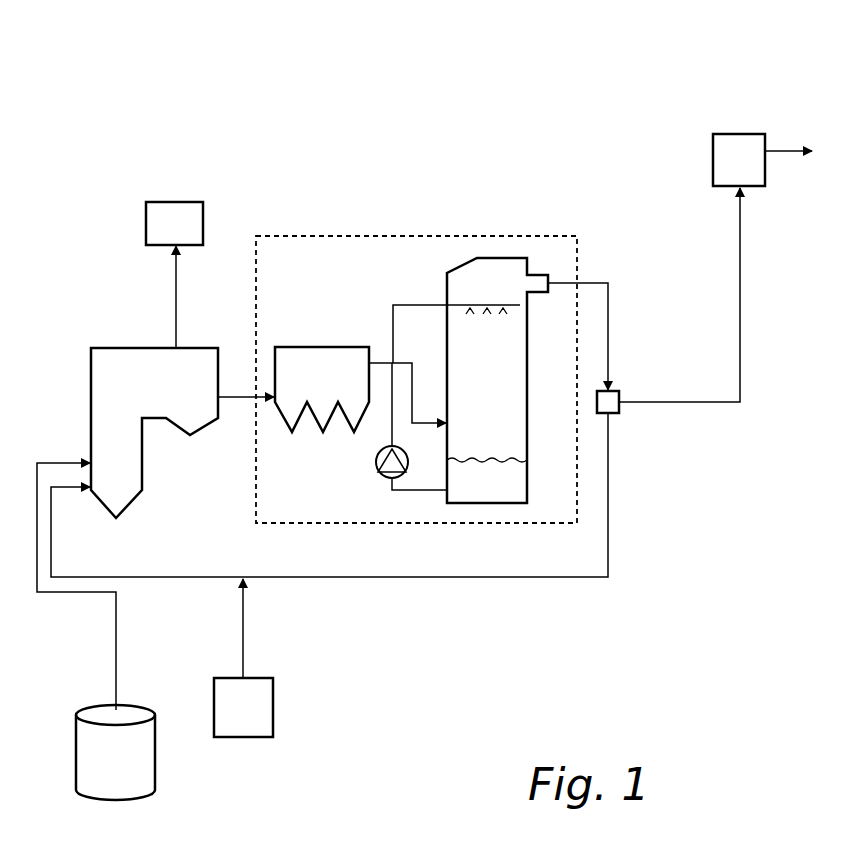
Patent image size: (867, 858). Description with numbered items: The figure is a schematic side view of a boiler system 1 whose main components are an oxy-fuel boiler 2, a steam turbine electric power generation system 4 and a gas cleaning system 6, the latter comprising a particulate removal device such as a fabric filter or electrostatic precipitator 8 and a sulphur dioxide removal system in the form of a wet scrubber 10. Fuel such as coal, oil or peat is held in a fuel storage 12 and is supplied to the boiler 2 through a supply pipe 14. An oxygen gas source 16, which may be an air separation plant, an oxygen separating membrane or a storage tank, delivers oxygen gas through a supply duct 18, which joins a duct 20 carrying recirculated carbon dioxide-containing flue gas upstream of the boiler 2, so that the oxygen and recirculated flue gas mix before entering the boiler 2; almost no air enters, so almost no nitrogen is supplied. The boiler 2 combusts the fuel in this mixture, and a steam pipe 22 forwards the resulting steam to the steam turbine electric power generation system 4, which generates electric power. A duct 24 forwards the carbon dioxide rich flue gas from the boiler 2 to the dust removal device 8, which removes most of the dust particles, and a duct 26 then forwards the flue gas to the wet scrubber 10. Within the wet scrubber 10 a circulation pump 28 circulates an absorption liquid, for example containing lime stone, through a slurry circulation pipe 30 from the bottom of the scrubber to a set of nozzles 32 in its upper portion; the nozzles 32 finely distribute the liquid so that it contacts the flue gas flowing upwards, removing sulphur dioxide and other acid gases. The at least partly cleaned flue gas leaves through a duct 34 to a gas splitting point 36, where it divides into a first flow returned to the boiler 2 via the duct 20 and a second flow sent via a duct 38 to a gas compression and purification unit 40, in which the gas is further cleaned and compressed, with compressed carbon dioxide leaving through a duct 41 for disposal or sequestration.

The boiler system 1 is at (110, 95).
The boiler 2 is at (105, 420).
The steam turbine electric power generation system 4 is at (146, 222).
The gas cleaning system 6 is at (423, 232).
The electrostatic precipitator 8 is at (300, 347).
The wet scrubber 10 is at (513, 257).
The fuel storage 12 is at (143, 764).
The supply pipe 14 is at (116, 612).
The oxygen gas source 16 is at (262, 708).
The supply duct 18 is at (243, 627).
The duct 20 is at (352, 578).
The steam pipe 22 is at (175, 302).
The duct 24 is at (227, 398).
The duct 26 is at (382, 363).
The circulation pump 28 is at (376, 463).
The slurry circulation pipe 30 is at (417, 305).
The nozzles 32 is at (507, 309).
The duct 34 is at (608, 316).
The gas splitting point 36 is at (613, 414).
The duct 38 is at (740, 253).
The gas compression and purification unit 40 is at (713, 142).
The duct 41 is at (783, 150).